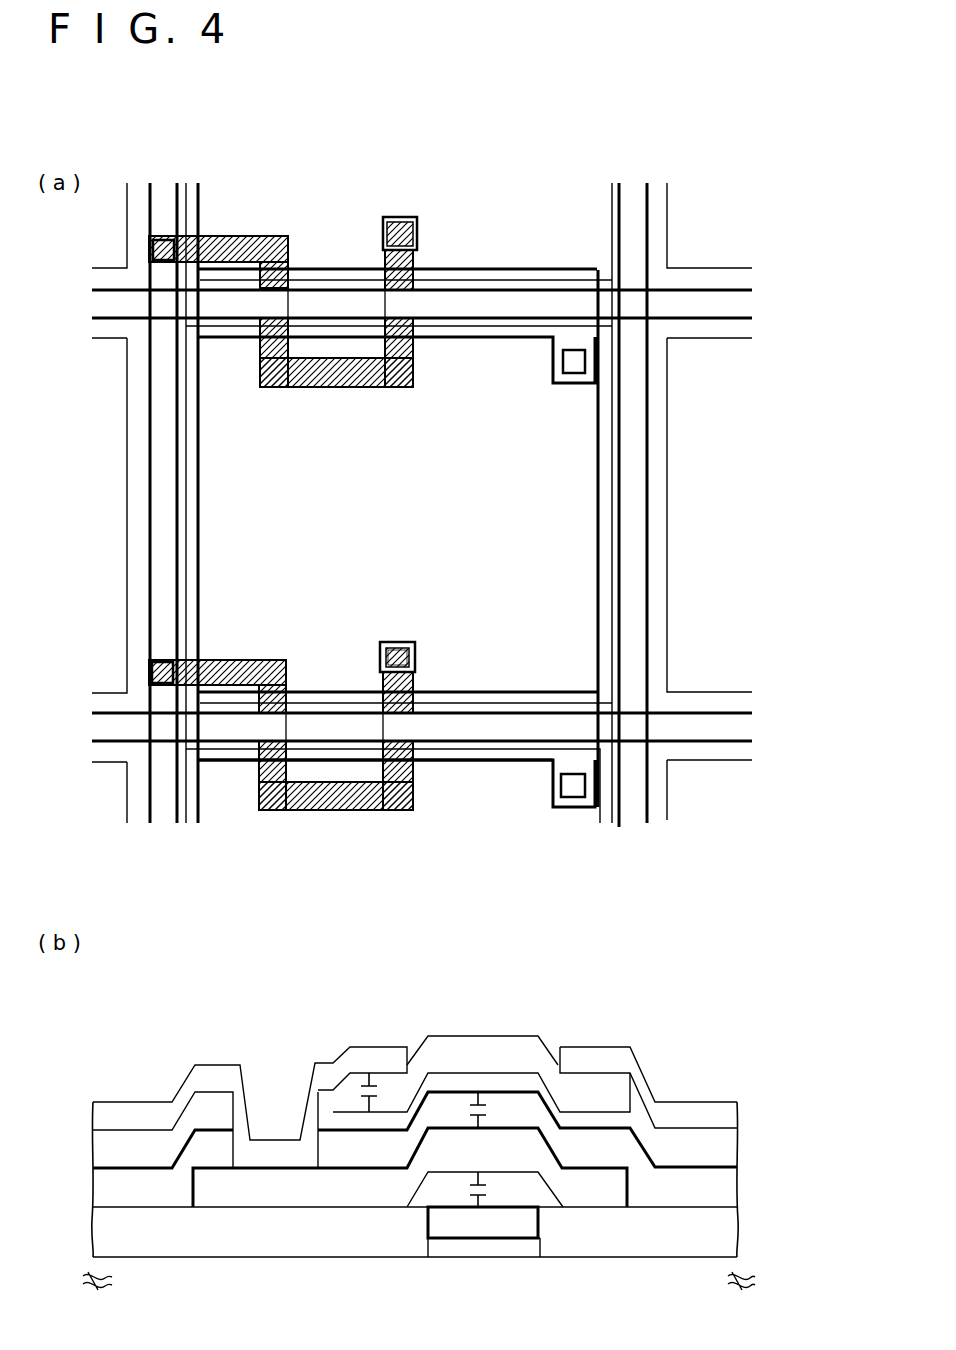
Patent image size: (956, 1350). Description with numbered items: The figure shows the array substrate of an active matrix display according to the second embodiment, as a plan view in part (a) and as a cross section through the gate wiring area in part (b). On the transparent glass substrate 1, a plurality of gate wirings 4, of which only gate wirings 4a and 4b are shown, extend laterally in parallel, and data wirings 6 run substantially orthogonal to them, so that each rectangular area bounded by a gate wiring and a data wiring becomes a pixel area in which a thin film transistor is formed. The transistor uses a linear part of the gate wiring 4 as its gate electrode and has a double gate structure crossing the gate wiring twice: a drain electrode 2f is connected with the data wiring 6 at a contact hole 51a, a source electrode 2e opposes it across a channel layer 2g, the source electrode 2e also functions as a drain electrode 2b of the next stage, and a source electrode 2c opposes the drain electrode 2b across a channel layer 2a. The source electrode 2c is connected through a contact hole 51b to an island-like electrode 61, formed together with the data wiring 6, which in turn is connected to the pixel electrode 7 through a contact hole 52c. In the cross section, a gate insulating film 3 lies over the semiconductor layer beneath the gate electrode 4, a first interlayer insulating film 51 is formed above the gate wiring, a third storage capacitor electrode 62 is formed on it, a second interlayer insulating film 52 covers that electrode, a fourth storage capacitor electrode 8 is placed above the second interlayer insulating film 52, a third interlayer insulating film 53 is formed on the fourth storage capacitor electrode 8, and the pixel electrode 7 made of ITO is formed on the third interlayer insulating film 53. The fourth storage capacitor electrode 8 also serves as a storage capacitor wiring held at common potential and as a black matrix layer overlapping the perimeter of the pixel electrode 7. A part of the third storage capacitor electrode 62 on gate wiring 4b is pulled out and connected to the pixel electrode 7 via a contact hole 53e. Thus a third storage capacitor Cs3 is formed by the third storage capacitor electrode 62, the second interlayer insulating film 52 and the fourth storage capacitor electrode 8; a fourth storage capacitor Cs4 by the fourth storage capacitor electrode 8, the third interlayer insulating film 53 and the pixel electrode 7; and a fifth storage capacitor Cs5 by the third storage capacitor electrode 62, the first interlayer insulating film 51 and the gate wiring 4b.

The transparent glass substrate 1 is at (730, 551).
The channel layer 2a is at (410, 724).
The drain electrode 2b is at (413, 780).
The source electrode 2c is at (413, 676).
The source electrode 2e is at (302, 810).
The drain electrode 2f is at (289, 249).
The channel layer 2g is at (290, 300).
The gate insulating film 3 is at (428, 1247).
The gate wiring 4 is at (428, 1221).
The gate wiring 4a is at (100, 735).
The gate wiring 4b is at (100, 312).
The data wiring 6 is at (160, 818).
The pixel electrode 7 is at (614, 446).
The fourth storage capacitor electrode 8 is at (602, 529).
The first interlayer insulating film 51 is at (98, 1229).
The contact hole 51a is at (149, 670).
The contact hole 51b is at (417, 657).
The second interlayer insulating film 52 is at (98, 1188).
The contact hole 52c is at (397, 657).
The third interlayer insulating film 53 is at (98, 1148).
The contact hole 53e is at (563, 356).
The island-like electrode 61 is at (400, 641).
The third storage capacitor electrode 62 is at (479, 269).
The third storage capacitor Cs3 is at (497, 1110).
The fourth storage capacitor Cs4 is at (355, 1093).
The fifth storage capacitor Cs5 is at (497, 1189).